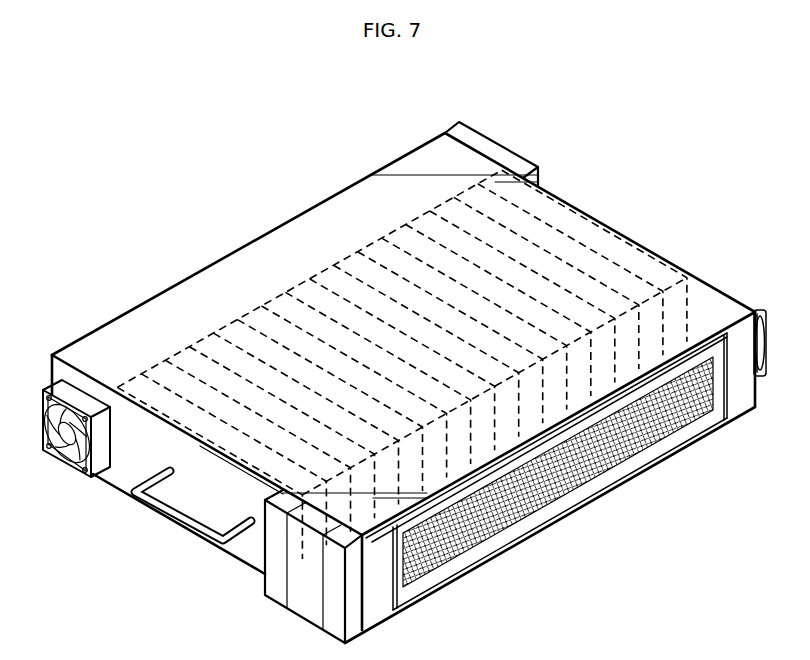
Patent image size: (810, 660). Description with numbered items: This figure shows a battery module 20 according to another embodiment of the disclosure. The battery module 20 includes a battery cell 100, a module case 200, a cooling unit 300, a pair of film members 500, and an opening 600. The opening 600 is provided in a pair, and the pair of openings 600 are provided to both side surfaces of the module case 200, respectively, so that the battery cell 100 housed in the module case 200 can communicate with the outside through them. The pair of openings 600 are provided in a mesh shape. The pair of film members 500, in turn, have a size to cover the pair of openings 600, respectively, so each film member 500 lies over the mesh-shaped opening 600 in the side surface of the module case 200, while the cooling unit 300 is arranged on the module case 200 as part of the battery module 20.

The battery module 20 is at (174, 137).
The battery cell 100 is at (580, 245).
The module case 200 is at (233, 242).
The cooling unit 300 is at (53, 476).
The film member 500 is at (623, 468).
The opening 600 is at (553, 497).